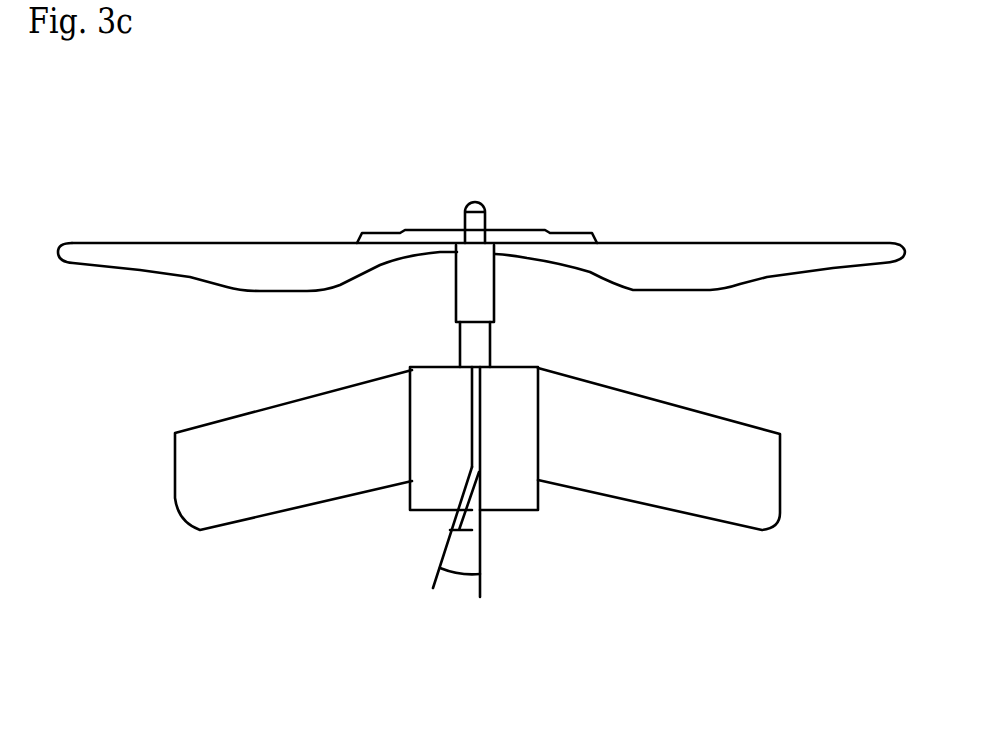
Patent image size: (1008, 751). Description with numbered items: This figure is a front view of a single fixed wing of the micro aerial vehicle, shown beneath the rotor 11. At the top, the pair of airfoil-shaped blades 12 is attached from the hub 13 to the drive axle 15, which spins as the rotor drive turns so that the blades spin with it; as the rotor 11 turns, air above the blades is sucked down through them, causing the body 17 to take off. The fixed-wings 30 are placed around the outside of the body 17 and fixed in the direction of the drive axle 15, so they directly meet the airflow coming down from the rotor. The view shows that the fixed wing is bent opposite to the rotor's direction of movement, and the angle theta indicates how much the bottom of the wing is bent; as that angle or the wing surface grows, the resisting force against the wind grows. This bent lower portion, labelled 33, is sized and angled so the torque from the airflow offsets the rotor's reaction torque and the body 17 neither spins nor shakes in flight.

The rotor 11 is at (481, 187).
The blades 12 is at (707, 258).
The hub 13 is at (503, 233).
The drive axle 15 is at (473, 343).
The body 17 is at (515, 493).
The fixed-wings 30 is at (455, 481).
The fin blade 33 is at (193, 520).